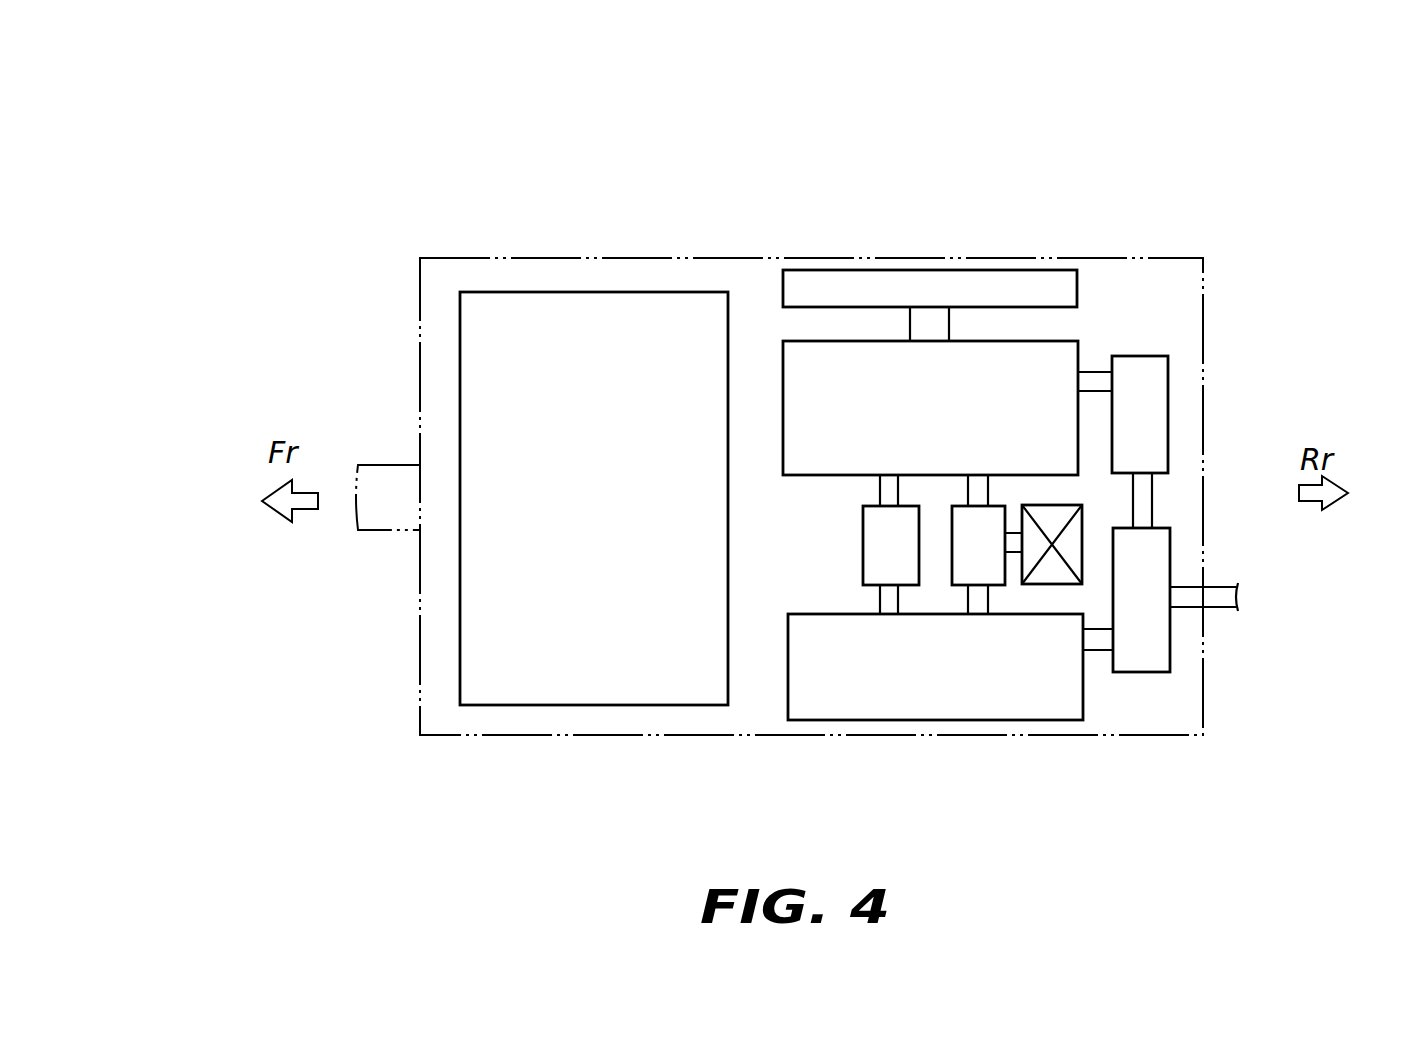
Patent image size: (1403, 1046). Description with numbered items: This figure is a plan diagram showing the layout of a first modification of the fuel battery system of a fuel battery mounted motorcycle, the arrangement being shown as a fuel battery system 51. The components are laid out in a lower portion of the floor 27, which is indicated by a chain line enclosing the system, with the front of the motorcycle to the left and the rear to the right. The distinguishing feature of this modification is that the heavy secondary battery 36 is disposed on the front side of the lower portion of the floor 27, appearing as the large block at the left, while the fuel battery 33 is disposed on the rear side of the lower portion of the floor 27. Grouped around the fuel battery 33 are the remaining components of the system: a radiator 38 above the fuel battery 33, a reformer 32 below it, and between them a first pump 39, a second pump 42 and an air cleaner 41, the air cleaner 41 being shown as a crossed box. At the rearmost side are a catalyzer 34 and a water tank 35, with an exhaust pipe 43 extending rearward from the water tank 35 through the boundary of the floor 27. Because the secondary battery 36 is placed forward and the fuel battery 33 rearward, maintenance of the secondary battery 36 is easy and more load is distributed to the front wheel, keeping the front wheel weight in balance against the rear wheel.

The fuel battery system 51 is at (447, 130).
The floor 27 is at (563, 257).
The secondary battery 36 is at (633, 292).
The radiator 38 is at (1008, 272).
The fuel battery 33 is at (840, 341).
The catalyzer 34 is at (1143, 356).
The water tank 35 is at (1170, 556).
The exhaust pipe 43 is at (1217, 607).
The first pump 39 is at (863, 545).
The second pump 42 is at (965, 506).
The air cleaner 41 is at (1057, 505).
The reformer 32 is at (898, 722).